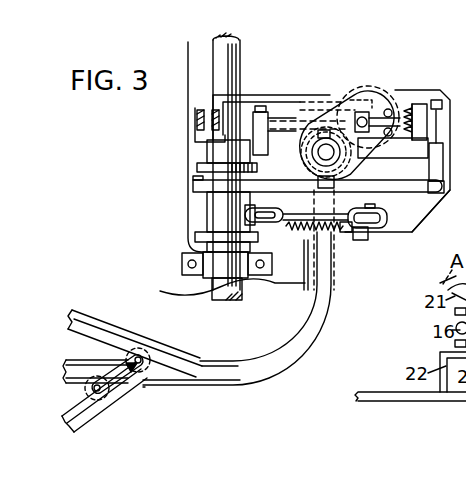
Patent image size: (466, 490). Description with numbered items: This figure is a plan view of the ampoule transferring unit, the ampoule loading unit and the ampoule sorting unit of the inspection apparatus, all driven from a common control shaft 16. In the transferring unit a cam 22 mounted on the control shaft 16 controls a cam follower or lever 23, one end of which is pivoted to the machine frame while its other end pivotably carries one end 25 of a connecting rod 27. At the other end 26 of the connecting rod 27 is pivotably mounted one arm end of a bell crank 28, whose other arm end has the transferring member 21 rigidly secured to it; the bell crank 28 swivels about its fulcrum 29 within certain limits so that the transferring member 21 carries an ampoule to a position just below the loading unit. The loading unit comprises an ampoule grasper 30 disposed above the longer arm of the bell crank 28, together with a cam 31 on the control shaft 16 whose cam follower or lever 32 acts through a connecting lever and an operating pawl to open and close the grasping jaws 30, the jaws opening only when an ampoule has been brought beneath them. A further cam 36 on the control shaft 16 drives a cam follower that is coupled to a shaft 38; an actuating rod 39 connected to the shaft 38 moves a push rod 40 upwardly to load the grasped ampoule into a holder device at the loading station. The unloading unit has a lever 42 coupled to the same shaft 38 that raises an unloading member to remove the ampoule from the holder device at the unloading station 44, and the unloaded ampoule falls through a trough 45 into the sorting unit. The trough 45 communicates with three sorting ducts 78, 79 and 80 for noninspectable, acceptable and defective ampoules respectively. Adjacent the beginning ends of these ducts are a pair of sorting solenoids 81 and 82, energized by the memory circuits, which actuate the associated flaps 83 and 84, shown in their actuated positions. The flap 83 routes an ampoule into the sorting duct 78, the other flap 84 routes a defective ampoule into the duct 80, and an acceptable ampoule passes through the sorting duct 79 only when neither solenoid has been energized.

The control shaft 16 is at (241, 53).
The transferring member 21 is at (194, 122).
The cam 22 is at (196, 236).
The cam follower or lever 23 is at (262, 233).
The one end of connecting rod 25 is at (228, 212).
The other end of connecting rod 26 is at (387, 218).
The connecting rod 27 is at (358, 240).
The bell crank 28 is at (362, 98).
The fulcrum 29 is at (290, 95).
The ampoule grasper 30 is at (385, 108).
The cam 31 is at (193, 182).
The cam follower or lever 32 is at (418, 192).
The cam 36 is at (198, 167).
The shaft 38 is at (258, 106).
The actuating rod 39 is at (303, 128).
The push rod 40 is at (357, 118).
The lever 42 is at (290, 150).
The unloading station 44 is at (368, 138).
The trough 45 is at (314, 321).
The sorting duct 78 is at (92, 322).
The sorting duct 79 is at (73, 370).
The sorting duct 80 is at (83, 424).
The sorting solenoid 81 is at (146, 352).
The sorting solenoid 82 is at (86, 393).
The flap 83 is at (163, 376).
The flap 84 is at (117, 381).